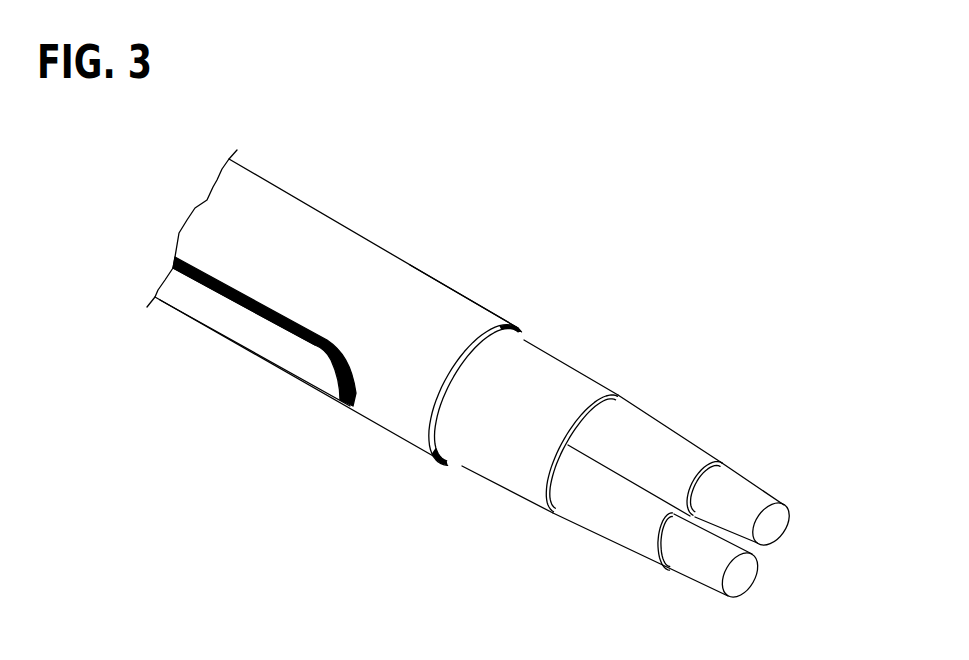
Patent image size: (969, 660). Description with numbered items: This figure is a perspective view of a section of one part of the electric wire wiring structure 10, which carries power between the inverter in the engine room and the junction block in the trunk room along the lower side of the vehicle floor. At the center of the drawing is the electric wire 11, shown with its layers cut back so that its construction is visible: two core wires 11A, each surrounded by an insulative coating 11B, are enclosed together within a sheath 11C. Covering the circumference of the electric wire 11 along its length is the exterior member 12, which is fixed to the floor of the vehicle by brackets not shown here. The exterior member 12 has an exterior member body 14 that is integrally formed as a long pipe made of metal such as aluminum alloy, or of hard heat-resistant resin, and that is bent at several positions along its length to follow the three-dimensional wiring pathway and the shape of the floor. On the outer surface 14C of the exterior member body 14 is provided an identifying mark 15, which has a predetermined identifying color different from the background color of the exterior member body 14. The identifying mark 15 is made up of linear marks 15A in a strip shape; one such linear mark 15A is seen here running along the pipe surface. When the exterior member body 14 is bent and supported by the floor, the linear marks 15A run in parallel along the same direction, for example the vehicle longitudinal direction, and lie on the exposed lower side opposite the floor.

The electric wire wiring structure 10 is at (596, 219).
The electric wire 11 is at (810, 320).
The core wire 11A is at (713, 557).
The insulative coating 11B is at (653, 517).
The sheath 11C is at (590, 391).
The exterior member 12 is at (358, 240).
The exterior member body 14 is at (390, 257).
The outer surface 14C is at (435, 284).
The identifying mark 15 is at (231, 320).
The linear mark 15A is at (285, 330).